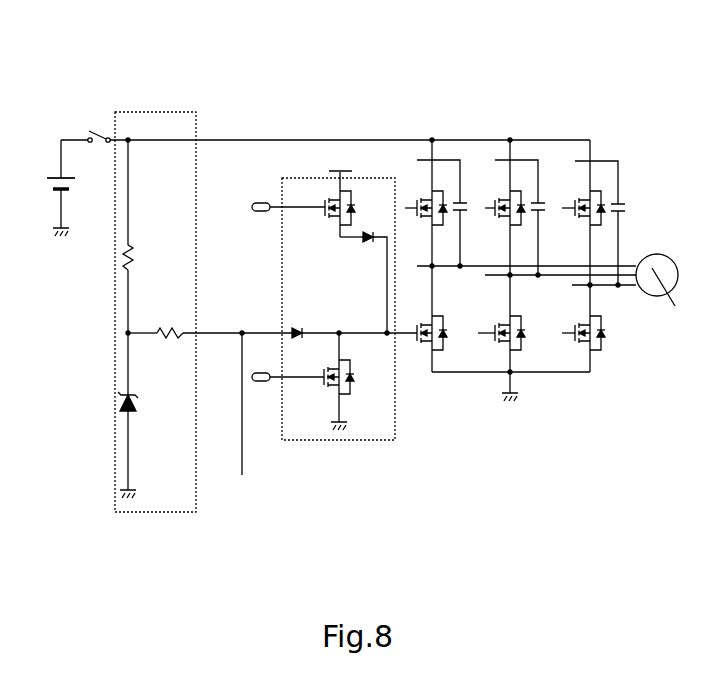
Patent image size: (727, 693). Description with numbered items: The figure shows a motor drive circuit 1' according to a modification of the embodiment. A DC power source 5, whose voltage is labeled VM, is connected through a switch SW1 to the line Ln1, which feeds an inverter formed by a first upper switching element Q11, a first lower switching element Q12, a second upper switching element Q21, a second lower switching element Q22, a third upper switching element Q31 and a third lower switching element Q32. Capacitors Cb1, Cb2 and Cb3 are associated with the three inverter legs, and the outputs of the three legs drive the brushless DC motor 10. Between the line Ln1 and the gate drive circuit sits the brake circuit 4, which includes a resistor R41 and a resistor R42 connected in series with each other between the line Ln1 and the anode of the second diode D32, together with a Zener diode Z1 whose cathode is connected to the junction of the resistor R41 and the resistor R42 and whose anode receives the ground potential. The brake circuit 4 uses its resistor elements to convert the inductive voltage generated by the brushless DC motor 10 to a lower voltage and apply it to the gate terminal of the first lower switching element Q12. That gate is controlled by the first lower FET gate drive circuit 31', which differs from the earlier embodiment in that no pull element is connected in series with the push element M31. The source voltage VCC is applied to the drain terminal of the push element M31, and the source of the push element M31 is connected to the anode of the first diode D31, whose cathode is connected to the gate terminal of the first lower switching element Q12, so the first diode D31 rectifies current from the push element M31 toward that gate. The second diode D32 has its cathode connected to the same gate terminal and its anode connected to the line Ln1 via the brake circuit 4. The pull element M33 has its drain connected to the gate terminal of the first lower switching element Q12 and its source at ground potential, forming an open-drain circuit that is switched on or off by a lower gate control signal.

The line Ln1 is at (300, 138).
The switch SW1 is at (100, 127).
The DC power source 5 is at (79, 183).
The motor supply voltage VM is at (56, 170).
The brake circuit 4 is at (196, 112).
The resistor R41 is at (136, 266).
The resistor R42 is at (166, 329).
The Zener diode Z1 is at (139, 402).
The first lower FET gate drive circuit 31' is at (335, 294).
The source voltage VCC is at (341, 174).
The push element M31 is at (329, 222).
The first diode D31 is at (369, 236).
The second diode D32 is at (301, 332).
The pull element M33 is at (327, 362).
The motor drive circuit 1' is at (519, 171).
The first upper switching element Q11 is at (424, 201).
The second upper switching element Q21 is at (502, 201).
The third upper switching element Q31 is at (581, 199).
The first lower switching element Q12 is at (424, 324).
The second lower switching element Q22 is at (502, 324).
The third lower switching element Q32 is at (581, 322).
The capacitor Cb1 is at (468, 213).
The capacitor Cb2 is at (546, 213).
The capacitor Cb3 is at (626, 213).
The brushless DC motor 10 is at (643, 292).